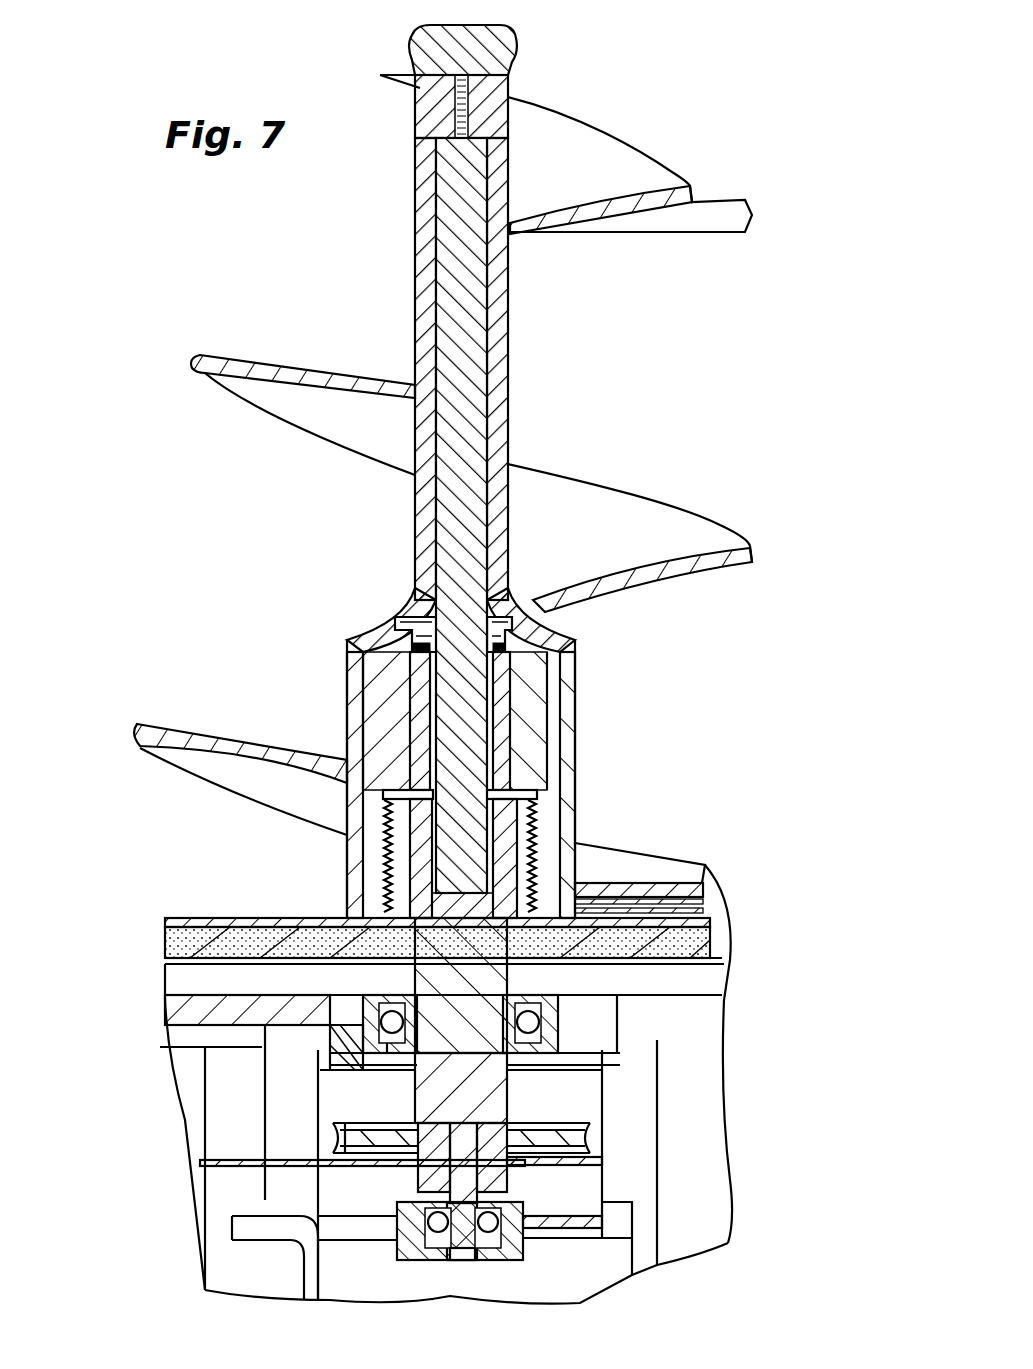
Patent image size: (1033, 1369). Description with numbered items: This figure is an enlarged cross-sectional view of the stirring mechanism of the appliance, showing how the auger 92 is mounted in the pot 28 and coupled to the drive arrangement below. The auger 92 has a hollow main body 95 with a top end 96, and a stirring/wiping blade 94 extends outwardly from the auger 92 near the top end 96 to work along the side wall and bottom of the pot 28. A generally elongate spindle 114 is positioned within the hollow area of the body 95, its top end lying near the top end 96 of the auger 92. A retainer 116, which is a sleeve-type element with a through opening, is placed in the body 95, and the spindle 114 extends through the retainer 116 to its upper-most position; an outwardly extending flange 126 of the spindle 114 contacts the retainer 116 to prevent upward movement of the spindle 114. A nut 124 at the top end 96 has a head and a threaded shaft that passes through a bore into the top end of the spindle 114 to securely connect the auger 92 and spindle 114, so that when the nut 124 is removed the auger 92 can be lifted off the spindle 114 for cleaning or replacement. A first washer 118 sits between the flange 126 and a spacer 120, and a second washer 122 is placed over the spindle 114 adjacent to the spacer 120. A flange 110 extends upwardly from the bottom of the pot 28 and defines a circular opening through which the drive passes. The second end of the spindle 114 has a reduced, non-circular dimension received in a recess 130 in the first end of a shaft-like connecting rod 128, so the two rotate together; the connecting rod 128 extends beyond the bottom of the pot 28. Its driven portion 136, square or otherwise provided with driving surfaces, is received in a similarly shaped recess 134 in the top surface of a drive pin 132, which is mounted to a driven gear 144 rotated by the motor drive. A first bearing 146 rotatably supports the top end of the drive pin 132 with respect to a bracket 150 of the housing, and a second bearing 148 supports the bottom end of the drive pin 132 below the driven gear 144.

The pot 28 is at (232, 918).
The auger 92 is at (338, 218).
The stirring/wiping blade 94 is at (698, 175).
The main body 95 is at (515, 83).
The top end 96 is at (522, 40).
The flange 110 is at (520, 812).
The spindle 114 is at (474, 720).
The retainer 116 is at (525, 755).
The first washer 118 is at (513, 633).
The spacer 120 is at (510, 690).
The second washer 122 is at (522, 784).
The nut 124 is at (508, 51).
The flange 126 is at (398, 640).
The connecting rod 128 is at (430, 905).
The recess 130 is at (438, 828).
The drive pin 132 is at (485, 1098).
The recess 134 is at (535, 1053).
The driven portion 136 is at (535, 1020).
The driven gear 144 is at (590, 1135).
The first bearing 146 is at (385, 1020).
The second bearing 148 is at (400, 1215).
The bracket 150 is at (332, 1062).